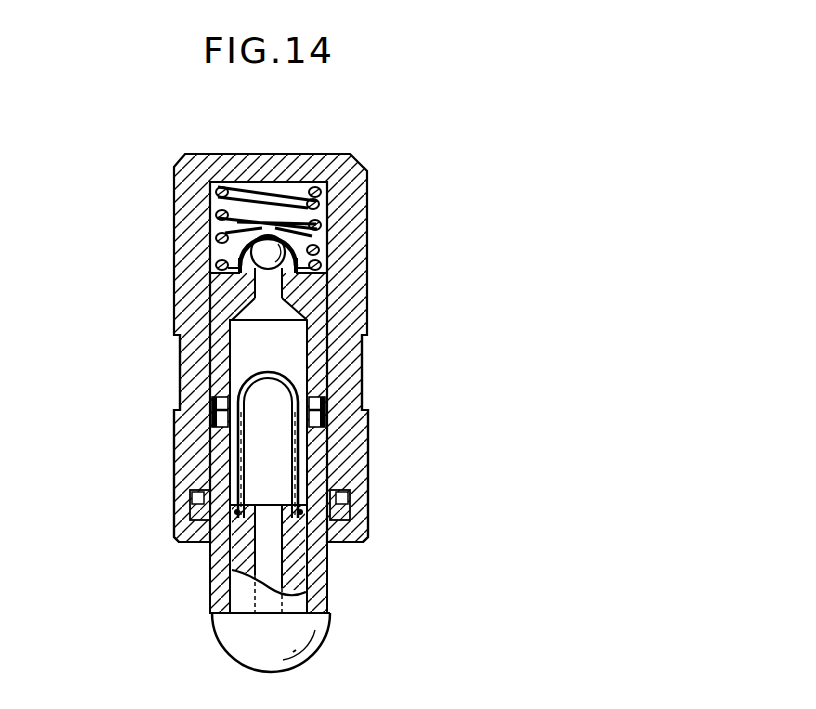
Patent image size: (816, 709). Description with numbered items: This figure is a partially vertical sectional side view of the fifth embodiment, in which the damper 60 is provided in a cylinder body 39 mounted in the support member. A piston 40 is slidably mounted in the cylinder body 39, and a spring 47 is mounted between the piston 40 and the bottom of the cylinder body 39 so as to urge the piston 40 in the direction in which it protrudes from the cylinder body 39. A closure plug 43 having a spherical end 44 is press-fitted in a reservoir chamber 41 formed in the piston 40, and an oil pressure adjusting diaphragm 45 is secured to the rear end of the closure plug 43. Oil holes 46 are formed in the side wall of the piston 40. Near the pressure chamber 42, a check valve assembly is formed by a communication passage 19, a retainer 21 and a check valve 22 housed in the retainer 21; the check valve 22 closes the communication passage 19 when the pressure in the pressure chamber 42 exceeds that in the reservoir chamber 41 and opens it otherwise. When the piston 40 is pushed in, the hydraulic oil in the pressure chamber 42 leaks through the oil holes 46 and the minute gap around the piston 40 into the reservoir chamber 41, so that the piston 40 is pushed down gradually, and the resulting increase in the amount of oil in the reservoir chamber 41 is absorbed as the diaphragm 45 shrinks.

The cylinder body 39 is at (357, 272).
The piston 40 is at (358, 346).
The reservoir chamber 41 is at (252, 340).
The pressure chamber 42 is at (215, 202).
The closure plug 43 is at (327, 593).
The spherical end 44 is at (213, 640).
The oil pressure adjusting diaphragm 45 is at (303, 455).
The oil holes 46 is at (325, 410).
The spring 47 is at (288, 202).
The communication passage 19 is at (265, 283).
The retainer 21 is at (318, 249).
The check valve 22 is at (262, 248).
The damper 60 is at (329, 302).